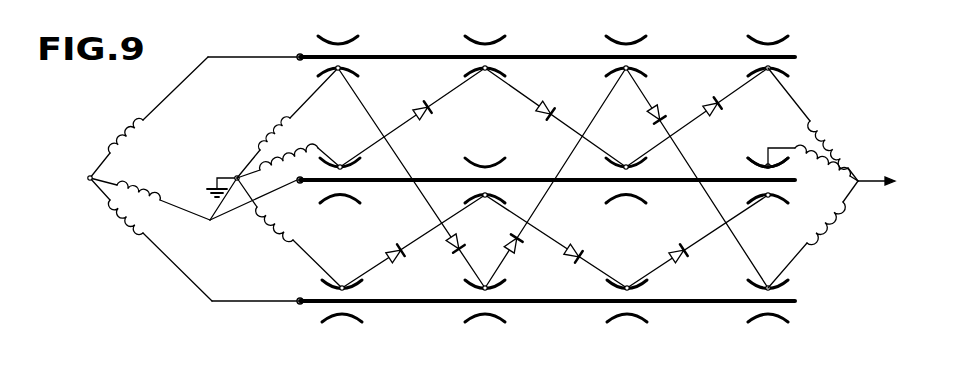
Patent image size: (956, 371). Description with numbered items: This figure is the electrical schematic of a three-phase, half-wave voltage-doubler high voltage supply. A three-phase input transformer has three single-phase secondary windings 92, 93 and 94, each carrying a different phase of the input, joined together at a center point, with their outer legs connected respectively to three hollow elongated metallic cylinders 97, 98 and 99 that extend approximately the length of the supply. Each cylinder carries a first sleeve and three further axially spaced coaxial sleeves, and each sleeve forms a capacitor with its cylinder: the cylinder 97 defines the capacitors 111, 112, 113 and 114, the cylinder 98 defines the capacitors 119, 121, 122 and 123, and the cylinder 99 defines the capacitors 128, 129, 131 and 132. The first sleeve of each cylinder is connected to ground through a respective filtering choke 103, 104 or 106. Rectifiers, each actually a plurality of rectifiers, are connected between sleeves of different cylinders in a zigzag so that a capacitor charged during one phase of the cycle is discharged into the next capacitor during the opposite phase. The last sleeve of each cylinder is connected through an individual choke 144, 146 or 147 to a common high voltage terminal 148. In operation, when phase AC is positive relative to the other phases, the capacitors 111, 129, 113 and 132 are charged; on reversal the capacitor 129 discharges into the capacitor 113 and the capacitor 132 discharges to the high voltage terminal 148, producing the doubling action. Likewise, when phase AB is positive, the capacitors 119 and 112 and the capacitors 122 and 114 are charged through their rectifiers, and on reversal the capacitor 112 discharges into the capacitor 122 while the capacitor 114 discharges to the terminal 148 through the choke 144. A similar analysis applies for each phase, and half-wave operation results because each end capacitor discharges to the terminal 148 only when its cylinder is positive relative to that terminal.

The single phase secondary winding 92 is at (125, 130).
The single phase secondary winding 93 is at (131, 183).
The single phase secondary winding 94 is at (126, 224).
The hollow elongated metallic cylinder 97 is at (574, 54).
The hollow elongated metallic cylinder 98 is at (543, 178).
The hollow elongated metallic cylinder 99 is at (410, 304).
The filtering choke 103 is at (270, 135).
The filtering choke 104 is at (297, 148).
The filtering choke 106 is at (262, 222).
The capacitor 111 is at (365, 46).
The capacitor 112 is at (519, 30).
The capacitor 113 is at (650, 46).
The capacitor 114 is at (793, 46).
The capacitor 119 is at (319, 191).
The capacitor 121 is at (457, 170).
The capacitor 122 is at (604, 193).
The capacitor 123 is at (752, 166).
The capacitor 128 is at (320, 316).
The capacitor 129 is at (466, 320).
The capacitor 131 is at (606, 318).
The capacitor 132 is at (748, 318).
The choke 144 is at (833, 140).
The choke 146 is at (803, 148).
The choke 147 is at (826, 232).
The high voltage terminal 148 is at (859, 187).